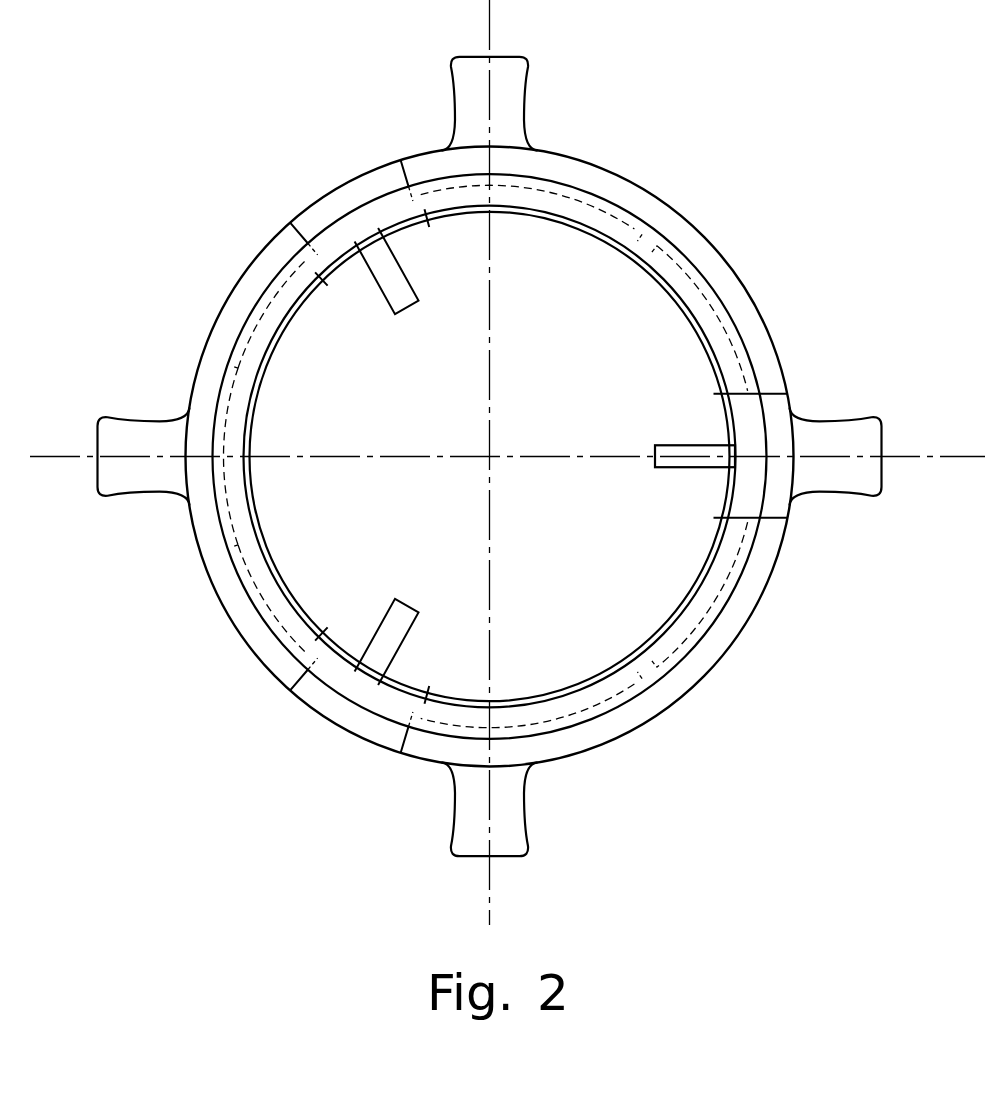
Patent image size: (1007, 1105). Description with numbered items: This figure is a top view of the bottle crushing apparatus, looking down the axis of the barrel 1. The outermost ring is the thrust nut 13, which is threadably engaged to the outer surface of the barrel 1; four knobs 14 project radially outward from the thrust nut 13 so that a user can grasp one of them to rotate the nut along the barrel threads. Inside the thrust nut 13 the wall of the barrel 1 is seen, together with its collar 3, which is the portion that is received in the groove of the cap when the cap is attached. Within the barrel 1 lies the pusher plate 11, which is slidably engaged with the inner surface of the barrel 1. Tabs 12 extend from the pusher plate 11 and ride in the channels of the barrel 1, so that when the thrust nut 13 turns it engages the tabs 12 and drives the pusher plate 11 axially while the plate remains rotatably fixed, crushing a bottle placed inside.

The barrel 1 is at (762, 183).
The collar 3 is at (697, 617).
The pusher plate 11 is at (432, 395).
The tabs 12 is at (333, 703).
The thrust nut 13 is at (233, 312).
The knobs 14 is at (522, 105).